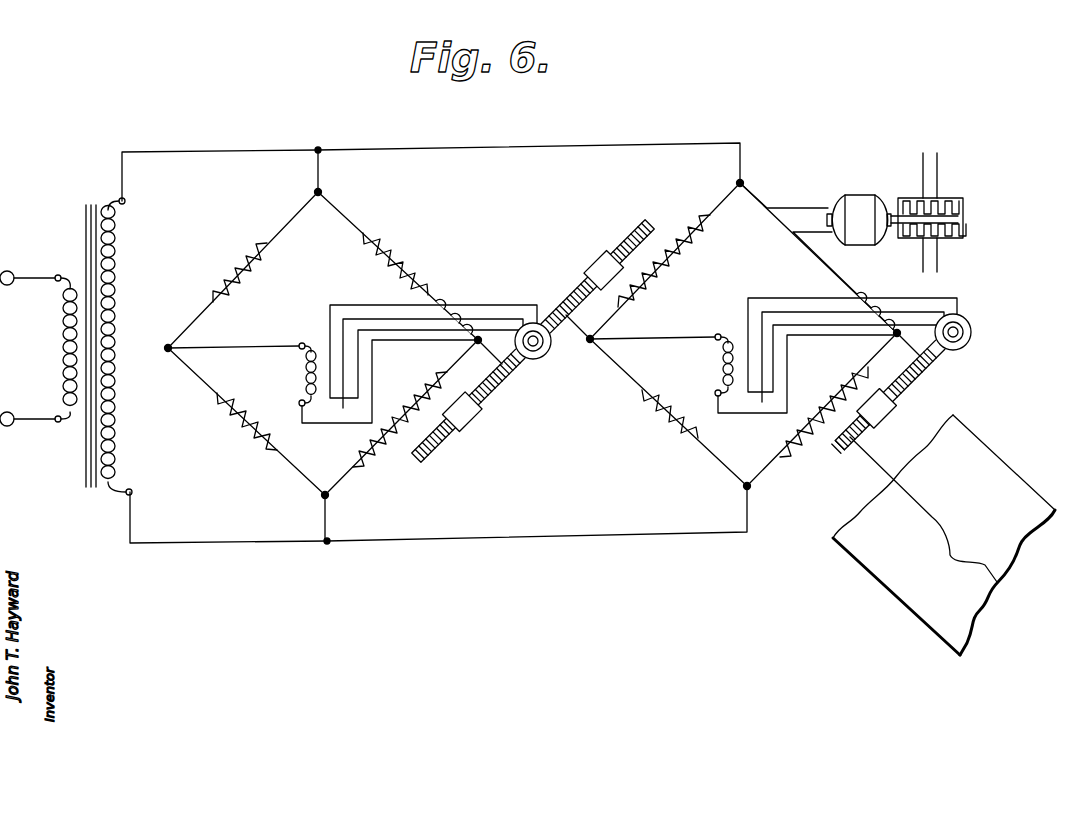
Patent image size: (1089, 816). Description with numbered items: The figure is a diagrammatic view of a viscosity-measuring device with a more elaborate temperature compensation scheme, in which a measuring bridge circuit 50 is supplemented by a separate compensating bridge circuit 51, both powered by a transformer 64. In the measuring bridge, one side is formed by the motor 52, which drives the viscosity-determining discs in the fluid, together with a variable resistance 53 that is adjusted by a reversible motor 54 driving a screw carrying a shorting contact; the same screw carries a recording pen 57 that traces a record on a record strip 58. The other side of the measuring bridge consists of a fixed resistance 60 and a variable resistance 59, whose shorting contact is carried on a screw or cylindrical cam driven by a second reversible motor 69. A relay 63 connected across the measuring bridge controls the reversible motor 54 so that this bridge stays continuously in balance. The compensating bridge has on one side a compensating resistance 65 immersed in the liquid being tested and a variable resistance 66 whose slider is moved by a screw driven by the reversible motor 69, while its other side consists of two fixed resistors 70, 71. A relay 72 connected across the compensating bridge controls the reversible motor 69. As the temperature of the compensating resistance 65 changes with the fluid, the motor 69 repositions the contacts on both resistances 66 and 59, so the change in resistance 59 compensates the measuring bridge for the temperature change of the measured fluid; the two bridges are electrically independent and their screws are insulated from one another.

The measuring bridge circuit 50 is at (758, 193).
The compensating bridge circuit 51 is at (345, 212).
The motor 52 is at (858, 208).
The variable resistance 53 is at (833, 403).
The reversible motor 54 is at (968, 322).
The recording pen 57 is at (930, 513).
The record strip 58 is at (985, 458).
The variable resistance 59 is at (688, 252).
The fixed resistance 60 is at (670, 420).
The relay 63 is at (717, 362).
The transformer 64 is at (116, 245).
The compensating resistance 65 is at (398, 258).
The variable resistance 66 is at (408, 407).
The reversible motor 69 is at (538, 360).
The fixed resistor 70 is at (240, 260).
The fixed resistor 71 is at (234, 420).
The relay 72 is at (305, 372).